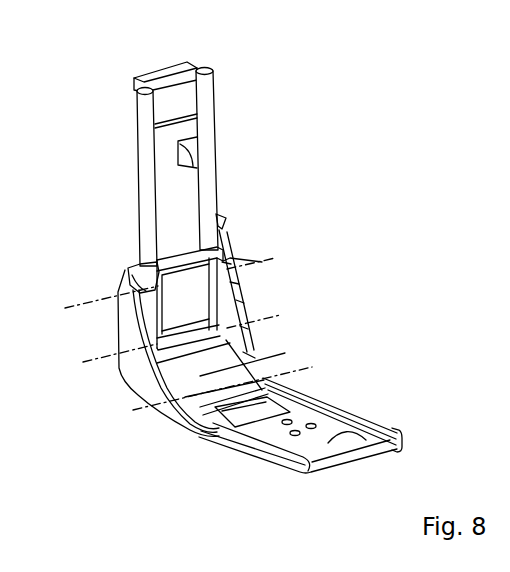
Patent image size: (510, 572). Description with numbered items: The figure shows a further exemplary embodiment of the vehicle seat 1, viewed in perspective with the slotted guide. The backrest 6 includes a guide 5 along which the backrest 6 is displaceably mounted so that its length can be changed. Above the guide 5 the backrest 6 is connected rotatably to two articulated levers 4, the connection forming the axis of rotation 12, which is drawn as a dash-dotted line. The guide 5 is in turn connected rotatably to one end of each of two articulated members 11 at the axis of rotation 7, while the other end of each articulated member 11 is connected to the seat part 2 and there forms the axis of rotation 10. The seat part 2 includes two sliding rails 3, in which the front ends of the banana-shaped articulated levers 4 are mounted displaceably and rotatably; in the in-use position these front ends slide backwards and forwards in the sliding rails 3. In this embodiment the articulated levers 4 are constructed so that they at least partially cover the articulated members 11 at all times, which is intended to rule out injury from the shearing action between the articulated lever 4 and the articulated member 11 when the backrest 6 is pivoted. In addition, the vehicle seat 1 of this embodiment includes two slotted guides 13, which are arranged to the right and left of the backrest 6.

The vehicle seat 1 is at (307, 136).
The seat part 2 is at (383, 447).
The sliding rails 3 is at (380, 422).
The articulated levers 4 is at (137, 370).
The guide 5 is at (140, 295).
The backrest 6 is at (145, 154).
The axis of rotation 7 is at (262, 310).
The axis of rotation 10 is at (328, 365).
The articulated members 11 is at (242, 358).
The axis of rotation 12 is at (88, 300).
The slotted guides 13 is at (227, 272).